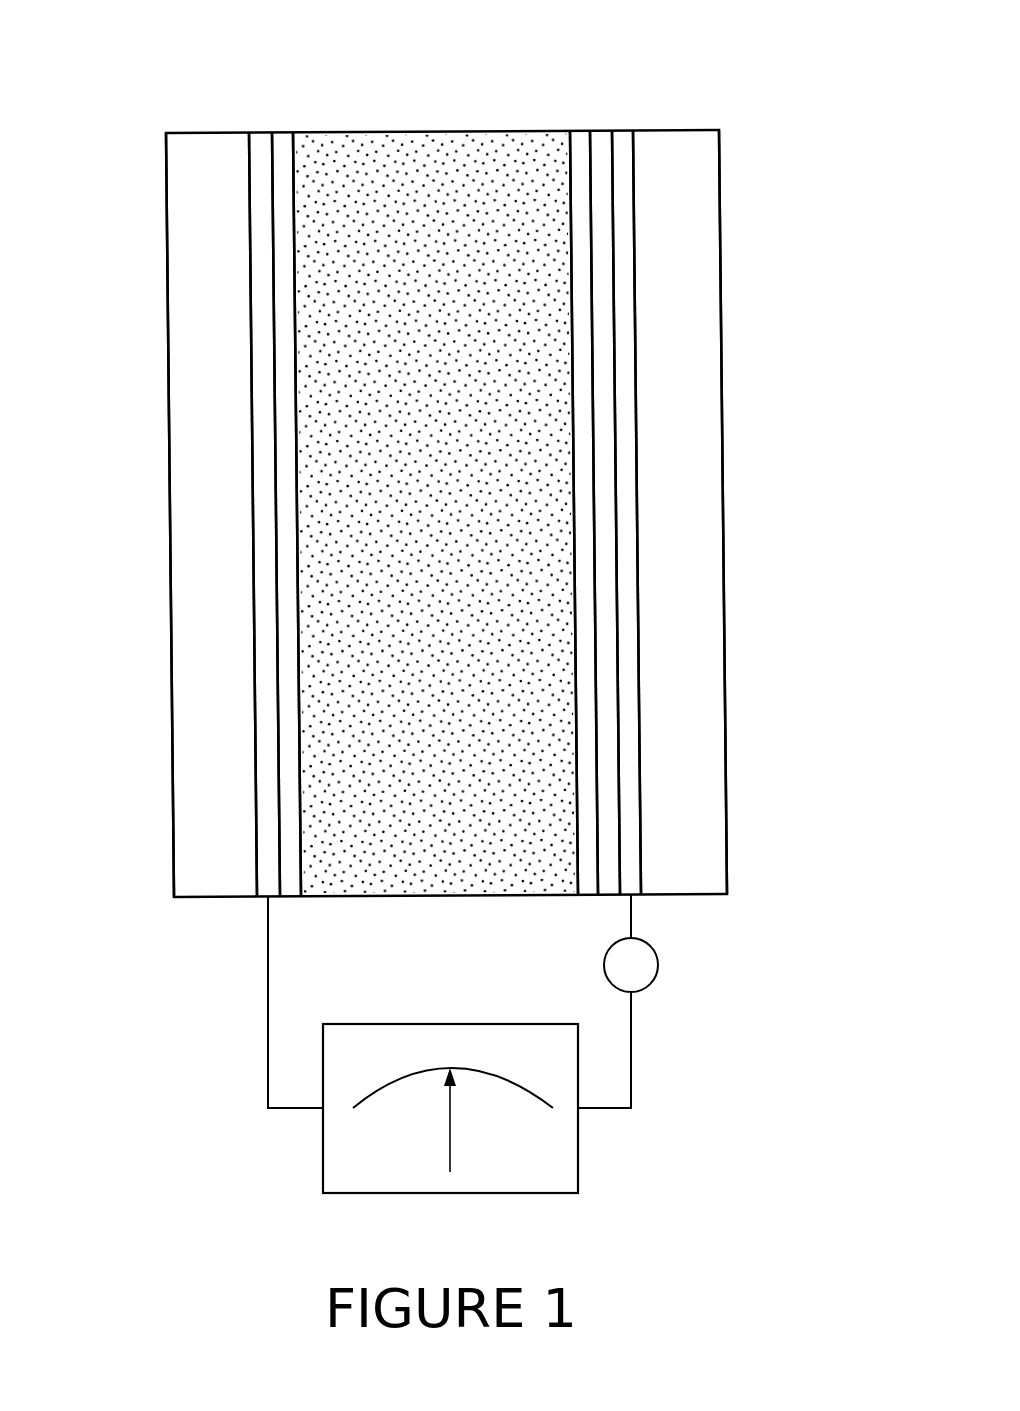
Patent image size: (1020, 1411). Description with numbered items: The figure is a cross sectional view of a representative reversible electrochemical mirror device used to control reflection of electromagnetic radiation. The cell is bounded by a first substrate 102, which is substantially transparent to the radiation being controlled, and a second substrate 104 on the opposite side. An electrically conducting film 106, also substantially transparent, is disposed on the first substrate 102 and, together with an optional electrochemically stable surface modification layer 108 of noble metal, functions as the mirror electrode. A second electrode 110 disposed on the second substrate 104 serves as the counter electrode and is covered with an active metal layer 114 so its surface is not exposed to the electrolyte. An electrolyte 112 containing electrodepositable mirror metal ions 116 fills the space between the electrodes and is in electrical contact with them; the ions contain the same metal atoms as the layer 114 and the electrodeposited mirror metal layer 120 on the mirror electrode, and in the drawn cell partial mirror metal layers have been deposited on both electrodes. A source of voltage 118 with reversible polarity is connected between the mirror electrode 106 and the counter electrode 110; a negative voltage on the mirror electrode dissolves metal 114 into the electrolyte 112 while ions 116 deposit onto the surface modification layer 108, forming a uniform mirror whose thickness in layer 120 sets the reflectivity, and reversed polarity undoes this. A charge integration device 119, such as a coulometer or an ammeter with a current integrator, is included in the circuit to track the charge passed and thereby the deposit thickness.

The first substrate 102 is at (699, 320).
The second substrate 104 is at (197, 558).
The electrically conducting film 106 is at (625, 140).
The surface modification layer 108 is at (601, 140).
The second electrode 110 is at (257, 140).
The electrolyte 112 is at (437, 150).
The active metal layer 114 is at (278, 140).
The mirror metal ions 116 is at (368, 183).
The source of voltage 118 is at (567, 1170).
The charge integration device 119 is at (658, 965).
The electrodeposited mirror metal layer 120 is at (580, 140).